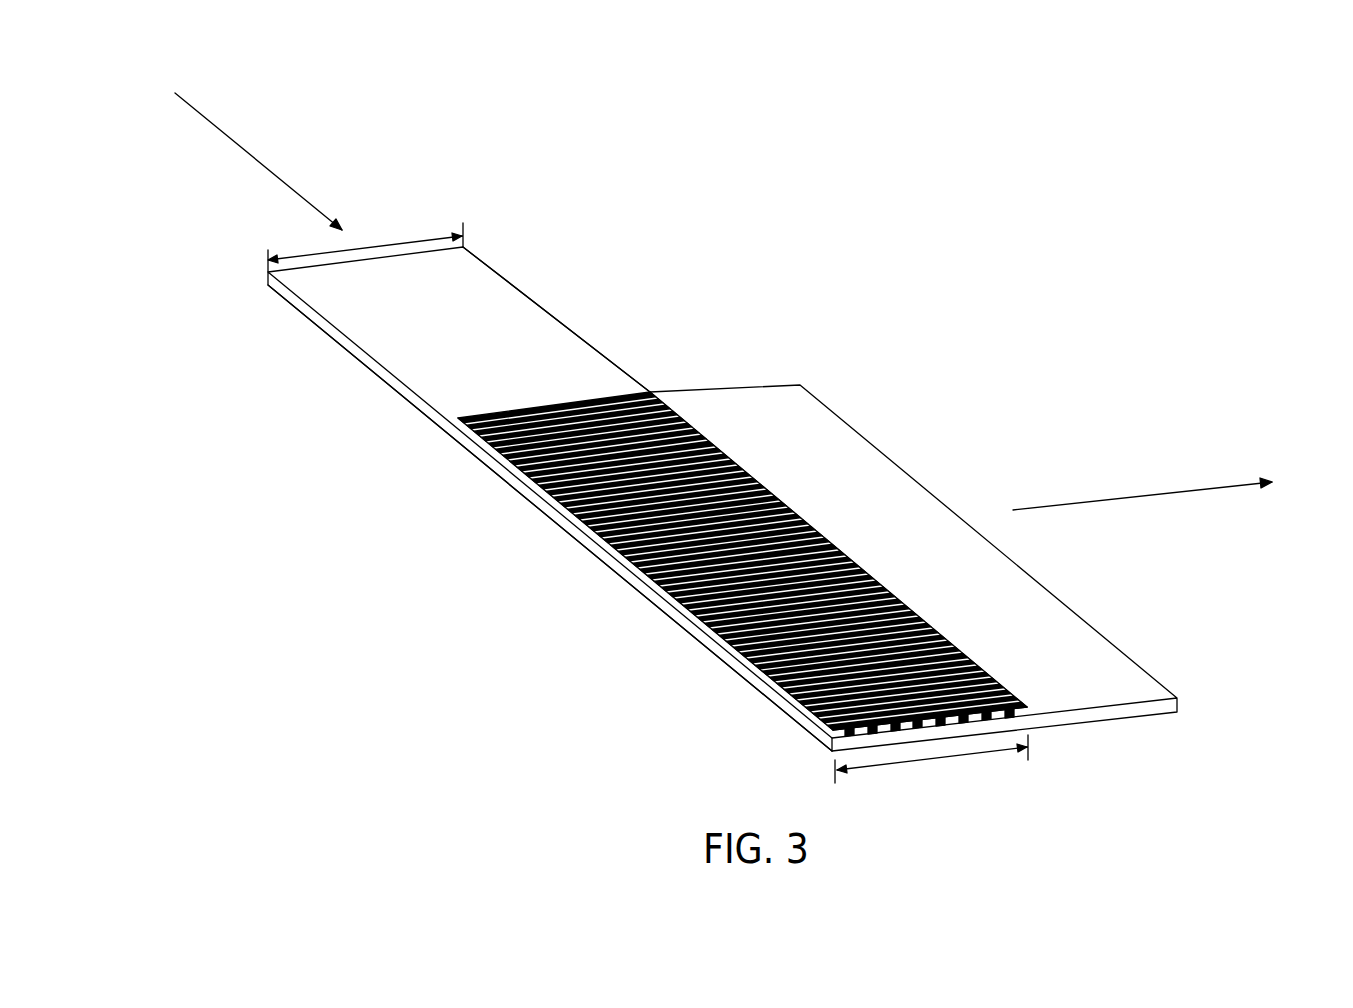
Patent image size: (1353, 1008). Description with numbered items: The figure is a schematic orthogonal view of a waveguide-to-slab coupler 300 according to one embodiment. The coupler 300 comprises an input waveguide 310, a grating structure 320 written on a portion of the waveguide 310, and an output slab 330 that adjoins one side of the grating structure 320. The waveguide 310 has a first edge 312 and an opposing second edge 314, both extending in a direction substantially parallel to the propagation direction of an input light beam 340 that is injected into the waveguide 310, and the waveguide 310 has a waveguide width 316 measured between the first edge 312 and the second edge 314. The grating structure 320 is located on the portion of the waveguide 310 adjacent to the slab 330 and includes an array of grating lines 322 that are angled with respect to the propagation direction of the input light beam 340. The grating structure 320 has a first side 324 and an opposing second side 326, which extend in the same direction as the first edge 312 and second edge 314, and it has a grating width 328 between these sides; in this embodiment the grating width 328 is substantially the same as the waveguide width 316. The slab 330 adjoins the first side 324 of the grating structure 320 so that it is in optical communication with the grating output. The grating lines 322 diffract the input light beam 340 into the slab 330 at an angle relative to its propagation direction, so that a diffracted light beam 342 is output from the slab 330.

The waveguide-to-slab coupler 300 is at (722, 497).
The input waveguide 310 is at (397, 357).
The first edge 312 is at (553, 320).
The second edge 314 is at (427, 420).
The waveguide width 316 is at (417, 240).
The grating structure 320 is at (700, 551).
The grating lines 322 is at (553, 485).
The first side 324 is at (800, 512).
The second side 326 is at (670, 612).
The grating width 328 is at (943, 760).
The output slab 330 is at (1047, 612).
The input light beam 340 is at (252, 157).
The diffracted light beam 342 is at (1203, 490).